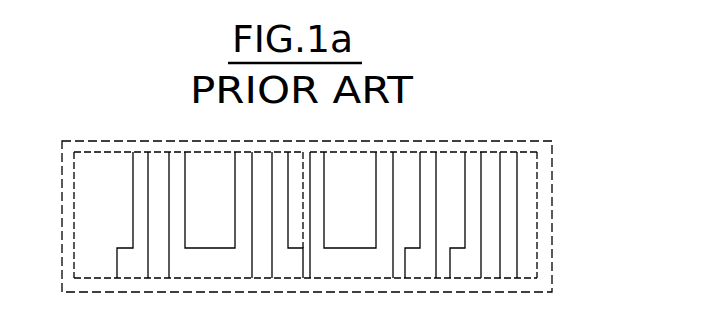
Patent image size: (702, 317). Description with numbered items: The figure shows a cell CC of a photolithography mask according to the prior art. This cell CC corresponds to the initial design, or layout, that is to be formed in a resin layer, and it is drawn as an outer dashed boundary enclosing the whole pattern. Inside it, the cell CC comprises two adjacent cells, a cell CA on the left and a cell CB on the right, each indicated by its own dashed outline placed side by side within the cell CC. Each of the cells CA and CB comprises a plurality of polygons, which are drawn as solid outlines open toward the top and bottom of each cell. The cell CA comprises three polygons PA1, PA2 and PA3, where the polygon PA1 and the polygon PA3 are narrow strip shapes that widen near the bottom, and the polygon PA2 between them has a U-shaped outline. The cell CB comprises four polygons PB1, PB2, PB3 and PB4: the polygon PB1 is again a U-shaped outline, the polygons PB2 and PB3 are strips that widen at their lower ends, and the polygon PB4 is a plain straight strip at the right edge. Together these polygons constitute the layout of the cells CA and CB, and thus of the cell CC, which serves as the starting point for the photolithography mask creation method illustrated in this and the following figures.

The polygon PA1 is at (135, 158).
The polygon PA2 is at (182, 158).
The polygon PA3 is at (277, 158).
The polygon PB1 is at (322, 158).
The polygon PB2 is at (425, 158).
The polygon PB3 is at (470, 158).
The polygon PB4 is at (515, 158).
The cell CA is at (74, 184).
The cell CB is at (538, 182).
The cell CC is at (552, 213).